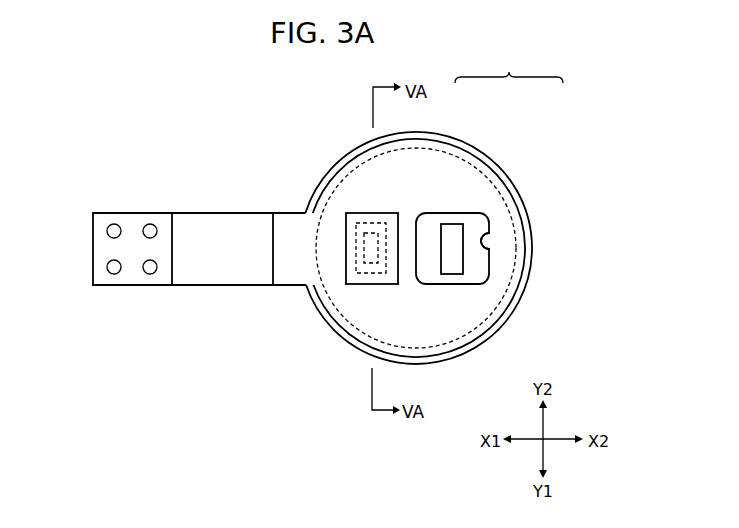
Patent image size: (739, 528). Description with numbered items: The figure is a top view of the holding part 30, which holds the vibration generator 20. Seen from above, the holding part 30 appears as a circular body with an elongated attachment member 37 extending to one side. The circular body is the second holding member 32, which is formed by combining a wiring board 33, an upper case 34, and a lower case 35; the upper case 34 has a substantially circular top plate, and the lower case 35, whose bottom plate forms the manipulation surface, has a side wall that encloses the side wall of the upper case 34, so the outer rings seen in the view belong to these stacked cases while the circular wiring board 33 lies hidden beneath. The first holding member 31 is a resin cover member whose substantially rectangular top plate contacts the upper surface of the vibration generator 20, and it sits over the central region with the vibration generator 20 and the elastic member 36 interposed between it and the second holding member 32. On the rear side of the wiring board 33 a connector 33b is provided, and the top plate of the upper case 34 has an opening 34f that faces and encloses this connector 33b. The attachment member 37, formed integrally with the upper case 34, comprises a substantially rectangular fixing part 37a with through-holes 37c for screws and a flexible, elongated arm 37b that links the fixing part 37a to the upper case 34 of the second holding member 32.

The holding part 30 is at (245, 109).
The vibration generator 20 is at (369, 258).
The first holding member 31 is at (353, 228).
The second holding member 32 is at (509, 69).
The wiring board 33 is at (498, 208).
The connector 33b is at (452, 233).
The upper case 34 is at (420, 157).
The opening 34f is at (489, 230).
The lower case 35 is at (452, 147).
The elastic member 36 is at (369, 259).
The attachment member 37 is at (223, 228).
The fixing part 37a is at (132, 270).
The arm 37b is at (222, 262).
The through-holes 37c is at (149, 228).